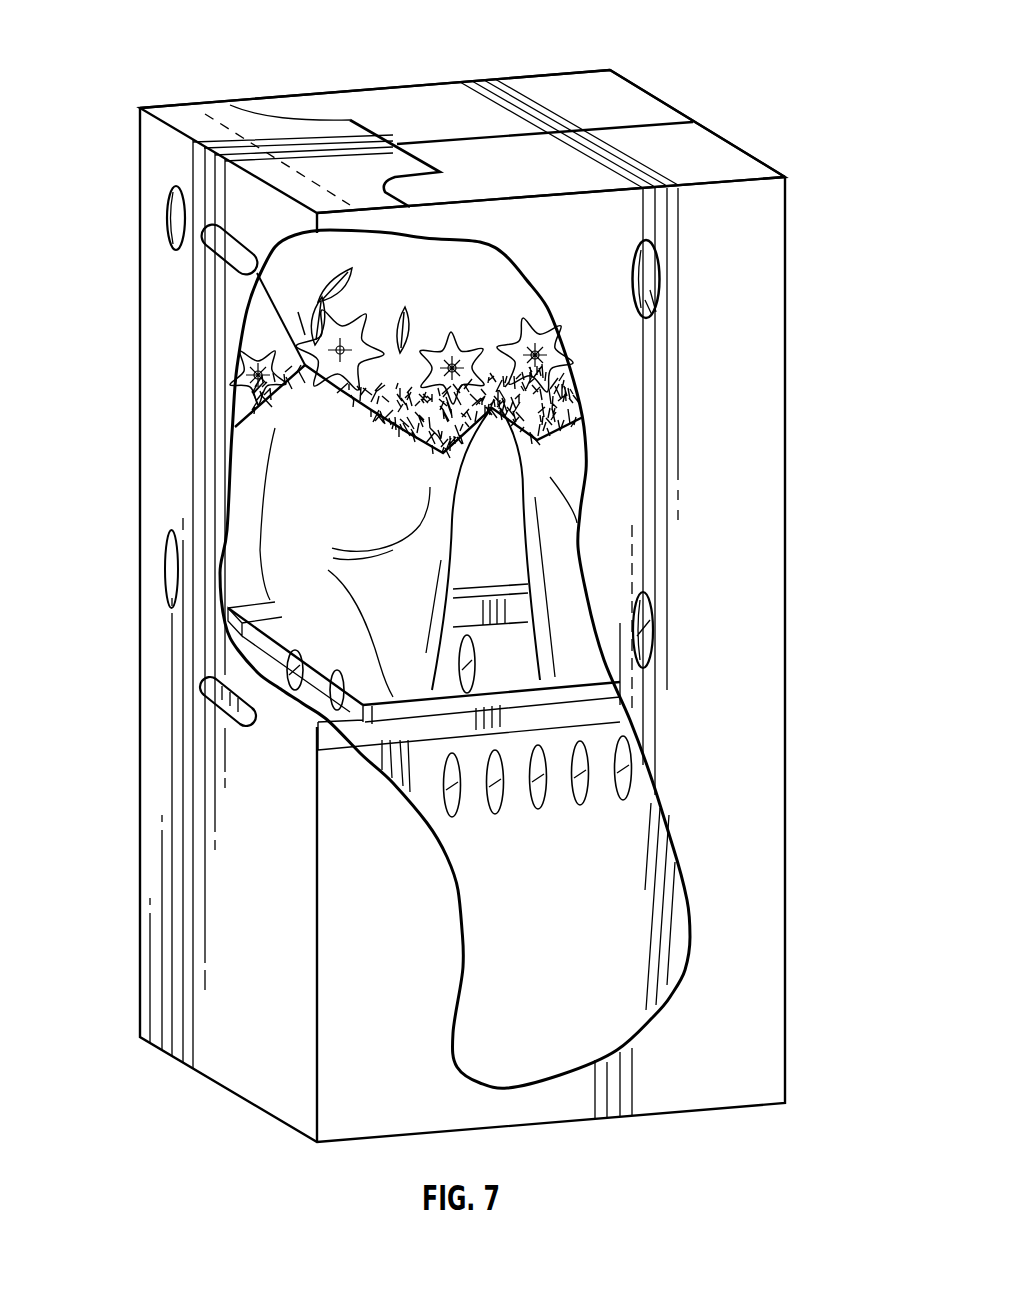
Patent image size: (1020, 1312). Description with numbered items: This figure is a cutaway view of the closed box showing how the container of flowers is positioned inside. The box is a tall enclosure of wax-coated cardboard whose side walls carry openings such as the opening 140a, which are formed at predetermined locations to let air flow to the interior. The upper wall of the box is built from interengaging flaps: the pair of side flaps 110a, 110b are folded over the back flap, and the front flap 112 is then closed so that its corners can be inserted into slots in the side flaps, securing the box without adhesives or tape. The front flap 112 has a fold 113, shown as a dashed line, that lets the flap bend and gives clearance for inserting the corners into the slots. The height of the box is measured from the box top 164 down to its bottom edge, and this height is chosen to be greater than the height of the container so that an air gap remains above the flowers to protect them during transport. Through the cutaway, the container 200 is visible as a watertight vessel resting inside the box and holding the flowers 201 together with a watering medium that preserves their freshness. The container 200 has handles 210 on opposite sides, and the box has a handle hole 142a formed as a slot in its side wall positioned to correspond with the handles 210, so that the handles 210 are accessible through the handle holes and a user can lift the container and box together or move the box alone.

The side flap 110a is at (720, 157).
The side flap 110b is at (387, 100).
The front flap 112 is at (230, 105).
The fold 113 is at (200, 112).
The box top 164 is at (483, 197).
The opening 140a is at (172, 235).
The handle hole 142a is at (212, 700).
The container 200 is at (583, 993).
The flowers 201 is at (245, 462).
The handles 210 is at (252, 730).